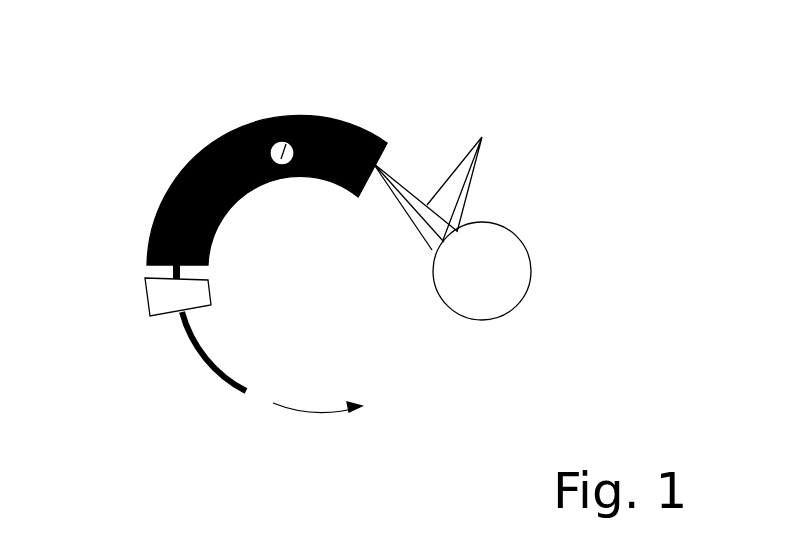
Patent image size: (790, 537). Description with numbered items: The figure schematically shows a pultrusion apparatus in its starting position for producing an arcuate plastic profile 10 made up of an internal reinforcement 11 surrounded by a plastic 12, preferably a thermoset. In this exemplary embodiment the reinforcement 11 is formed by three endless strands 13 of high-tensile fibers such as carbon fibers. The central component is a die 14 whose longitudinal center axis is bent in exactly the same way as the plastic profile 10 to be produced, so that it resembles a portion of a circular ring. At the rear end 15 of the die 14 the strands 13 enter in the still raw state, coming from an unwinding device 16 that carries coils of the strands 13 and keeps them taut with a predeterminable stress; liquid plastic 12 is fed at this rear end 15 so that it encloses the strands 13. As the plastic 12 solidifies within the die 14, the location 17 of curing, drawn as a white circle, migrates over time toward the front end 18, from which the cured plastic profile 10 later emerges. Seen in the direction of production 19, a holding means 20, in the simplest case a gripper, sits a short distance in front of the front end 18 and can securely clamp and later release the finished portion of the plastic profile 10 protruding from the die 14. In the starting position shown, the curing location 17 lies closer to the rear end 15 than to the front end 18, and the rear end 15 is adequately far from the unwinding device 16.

The plastic profile 10 is at (164, 382).
The internal reinforcement 11 is at (424, 169).
The plastic 12 is at (183, 333).
The endless strands 13 is at (445, 179).
The die 14 is at (335, 117).
The rear end 15 is at (387, 153).
The unwinding device 16 is at (503, 252).
The location of the curing 17 is at (288, 117).
The front end 18 is at (155, 272).
The direction of production 19 is at (288, 410).
The holding means 20 is at (147, 298).